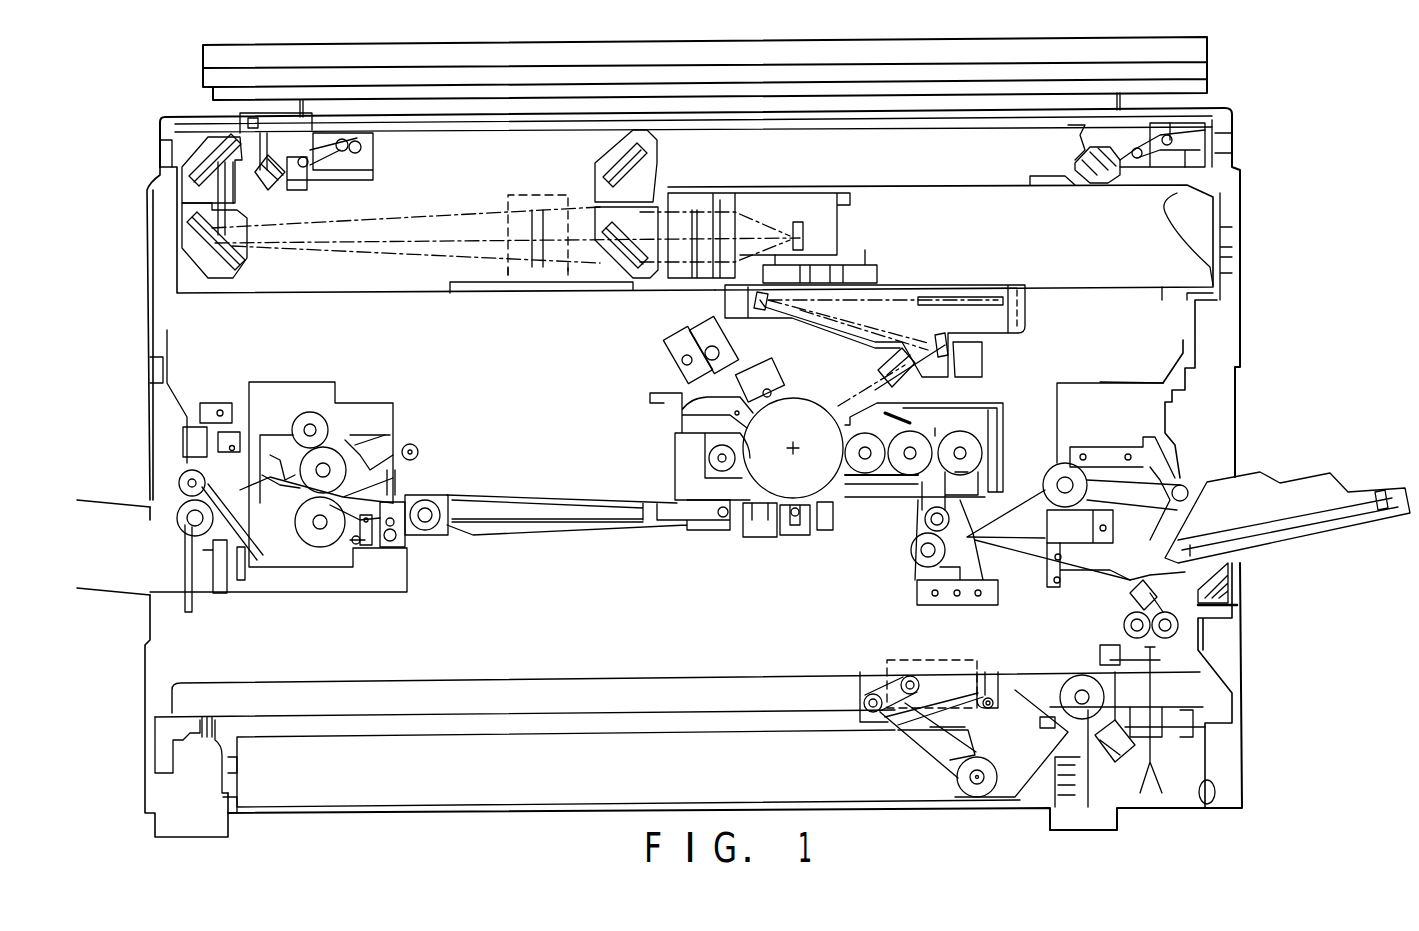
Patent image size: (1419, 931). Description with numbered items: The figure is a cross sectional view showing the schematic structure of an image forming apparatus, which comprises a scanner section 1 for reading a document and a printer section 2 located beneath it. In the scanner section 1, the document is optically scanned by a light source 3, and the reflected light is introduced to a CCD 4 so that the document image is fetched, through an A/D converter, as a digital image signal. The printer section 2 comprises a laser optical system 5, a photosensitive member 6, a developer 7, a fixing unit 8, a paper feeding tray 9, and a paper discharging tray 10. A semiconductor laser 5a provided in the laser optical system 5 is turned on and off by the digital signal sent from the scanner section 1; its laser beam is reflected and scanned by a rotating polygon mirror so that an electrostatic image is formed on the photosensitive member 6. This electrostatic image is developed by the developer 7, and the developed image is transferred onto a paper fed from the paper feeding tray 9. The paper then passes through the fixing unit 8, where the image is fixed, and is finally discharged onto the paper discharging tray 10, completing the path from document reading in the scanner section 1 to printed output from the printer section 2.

The scanner section 1 is at (462, 192).
The printer section 2 is at (528, 413).
The light source 3 is at (287, 183).
The CCD 4 is at (813, 242).
The laser optical system 5 is at (1022, 318).
The semiconductor laser 5a is at (970, 298).
The photosensitive member 6 is at (818, 396).
The developer 7 is at (898, 485).
The fixing unit 8 is at (320, 597).
The paper feeding tray 9 is at (1353, 495).
The paper discharging tray 10 is at (113, 503).